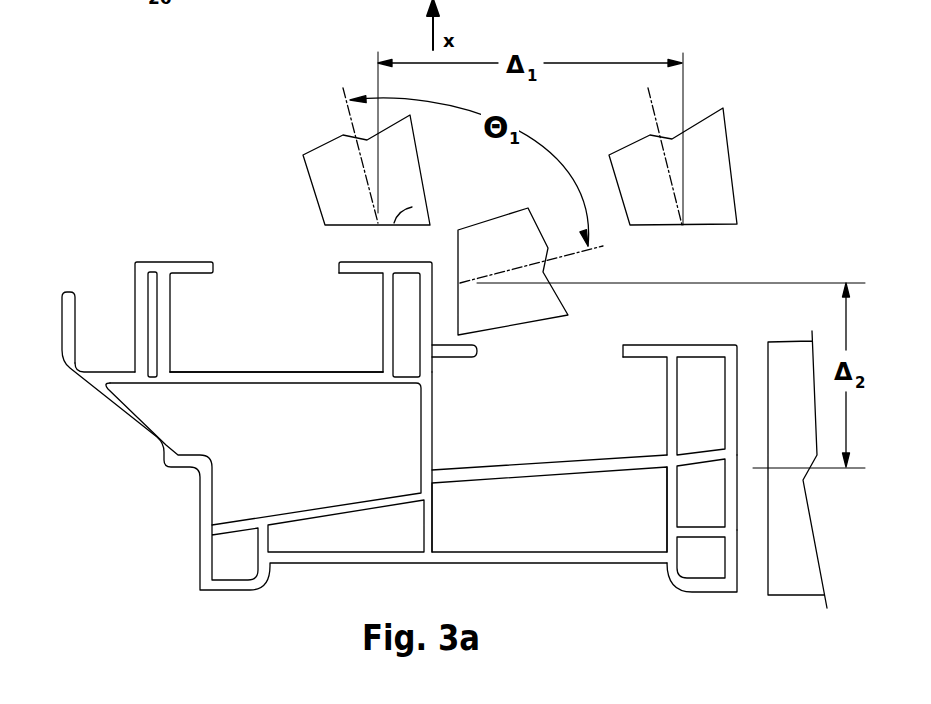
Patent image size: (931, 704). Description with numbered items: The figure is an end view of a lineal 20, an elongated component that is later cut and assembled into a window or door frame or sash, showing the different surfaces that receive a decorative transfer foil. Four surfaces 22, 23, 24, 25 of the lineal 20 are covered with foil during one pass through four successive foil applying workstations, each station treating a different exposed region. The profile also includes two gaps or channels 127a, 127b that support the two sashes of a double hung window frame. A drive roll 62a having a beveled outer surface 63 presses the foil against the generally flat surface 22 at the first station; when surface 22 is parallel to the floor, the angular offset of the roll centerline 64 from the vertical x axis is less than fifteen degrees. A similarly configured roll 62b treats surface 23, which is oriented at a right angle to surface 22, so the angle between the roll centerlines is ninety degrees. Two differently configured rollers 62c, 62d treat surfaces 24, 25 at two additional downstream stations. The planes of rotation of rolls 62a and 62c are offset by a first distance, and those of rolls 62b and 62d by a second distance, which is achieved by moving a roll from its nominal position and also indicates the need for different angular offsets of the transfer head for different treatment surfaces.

The lineal 20 is at (175, 528).
The surface 22 is at (357, 260).
The surface 23 is at (433, 332).
The surface 24 is at (650, 345).
The surface 25 is at (740, 542).
The drive roll 62a is at (313, 170).
The roll 62b is at (505, 302).
The roller 62c is at (700, 176).
The roller 62d is at (792, 573).
The beveled outer surface 63 is at (412, 207).
The centerline 64 is at (347, 98).
The channel 127a is at (232, 338).
The channel 127b is at (620, 430).